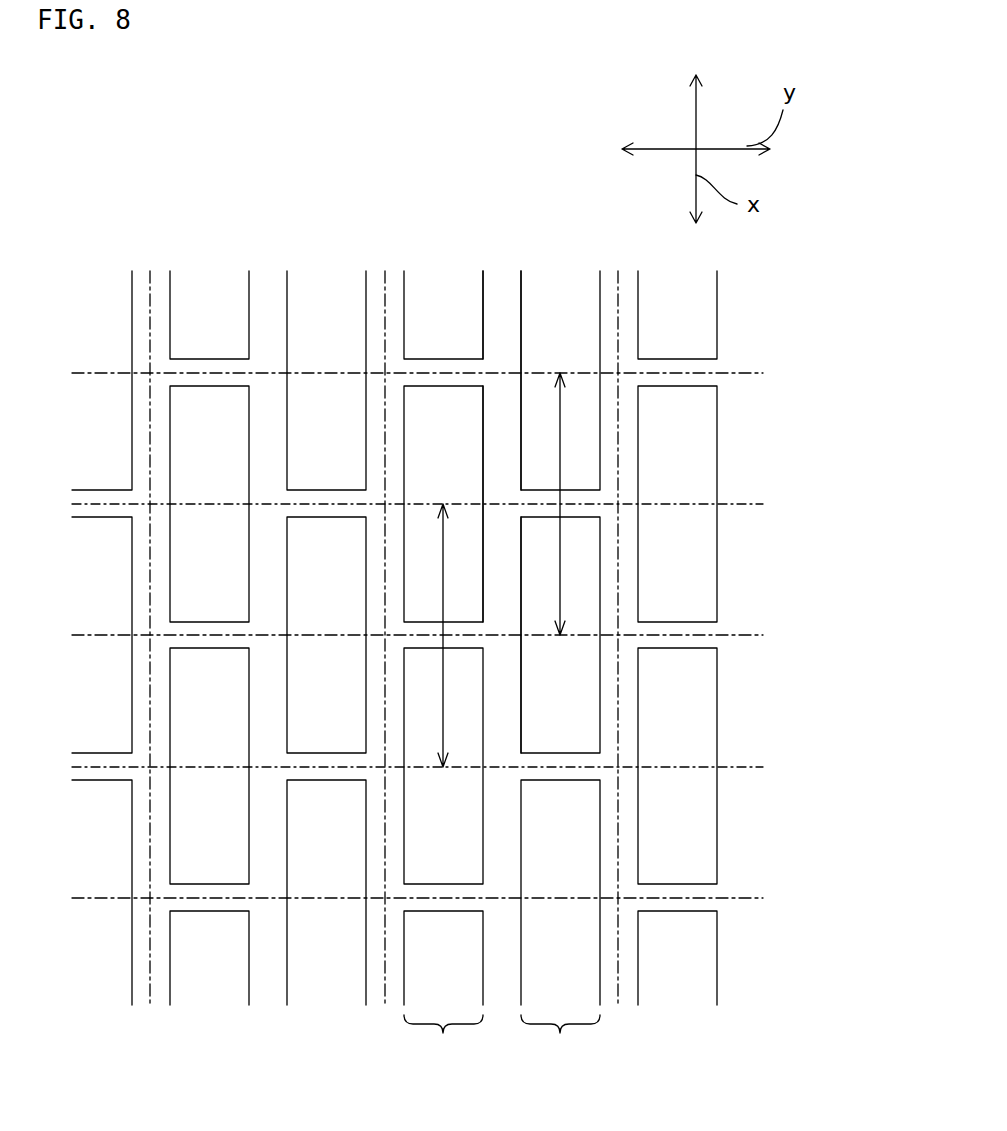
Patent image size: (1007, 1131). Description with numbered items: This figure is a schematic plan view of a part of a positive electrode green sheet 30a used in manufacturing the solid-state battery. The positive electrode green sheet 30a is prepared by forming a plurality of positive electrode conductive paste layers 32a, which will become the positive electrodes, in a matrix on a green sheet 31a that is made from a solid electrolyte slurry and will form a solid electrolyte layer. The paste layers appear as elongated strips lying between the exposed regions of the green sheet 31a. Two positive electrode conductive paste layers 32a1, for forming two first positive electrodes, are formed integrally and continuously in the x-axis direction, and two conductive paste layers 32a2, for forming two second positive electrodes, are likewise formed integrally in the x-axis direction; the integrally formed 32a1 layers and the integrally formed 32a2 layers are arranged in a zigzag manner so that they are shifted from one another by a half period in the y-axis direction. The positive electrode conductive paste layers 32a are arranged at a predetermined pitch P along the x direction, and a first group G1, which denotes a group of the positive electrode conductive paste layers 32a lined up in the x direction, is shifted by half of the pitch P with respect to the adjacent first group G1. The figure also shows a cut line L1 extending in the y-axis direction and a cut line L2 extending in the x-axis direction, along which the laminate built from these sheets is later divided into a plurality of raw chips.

The positive electrode green sheet 30a is at (499, 561).
The green sheet 31a is at (498, 292).
The positive electrode conductive paste layer 32a is at (499, 638).
The positive electrode conductive paste layer 32a1 is at (483, 410).
The conductive paste layer 32a2 is at (600, 310).
The pitch P is at (560, 463).
The first group G1 is at (502, 1044).
The cut line L1 is at (738, 898).
The cut line L2 is at (618, 948).